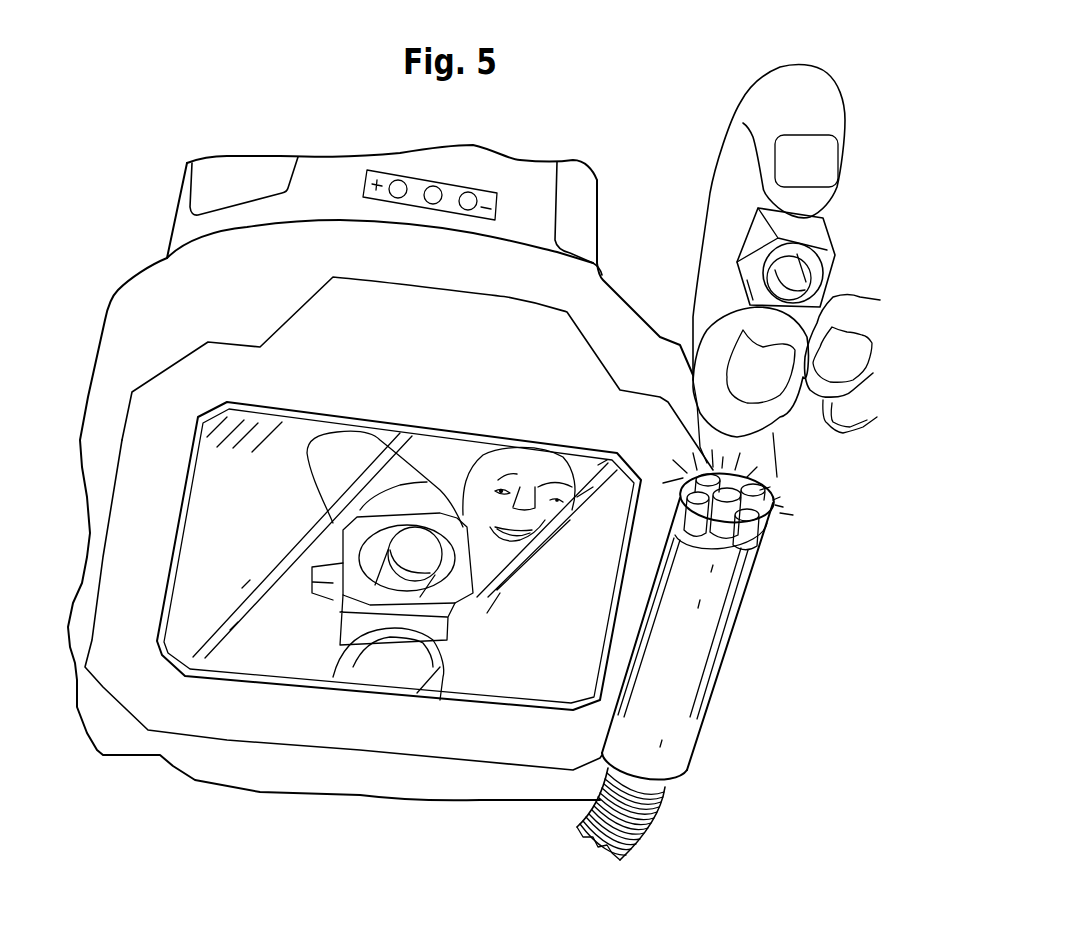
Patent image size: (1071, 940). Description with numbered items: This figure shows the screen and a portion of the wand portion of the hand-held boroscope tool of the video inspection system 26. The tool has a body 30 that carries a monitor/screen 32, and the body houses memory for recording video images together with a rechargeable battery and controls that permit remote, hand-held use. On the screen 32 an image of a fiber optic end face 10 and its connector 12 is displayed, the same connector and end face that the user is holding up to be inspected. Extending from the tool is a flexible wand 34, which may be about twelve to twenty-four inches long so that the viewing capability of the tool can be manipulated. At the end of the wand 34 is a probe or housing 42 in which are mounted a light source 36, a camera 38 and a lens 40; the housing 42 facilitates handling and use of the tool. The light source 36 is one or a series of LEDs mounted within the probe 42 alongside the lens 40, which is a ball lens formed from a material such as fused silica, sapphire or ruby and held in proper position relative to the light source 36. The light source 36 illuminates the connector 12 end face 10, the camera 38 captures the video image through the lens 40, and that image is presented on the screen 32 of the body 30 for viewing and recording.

The video inspection system 26 is at (622, 160).
The body 30 is at (580, 226).
The monitor/screen 32 is at (517, 680).
The connector 12 is at (806, 238).
The fiber optic end face 10 is at (793, 285).
The lens 40 is at (757, 452).
The light source 36 is at (757, 490).
The flexible wand 34 is at (775, 530).
The camera 38 is at (692, 532).
The probe or housing 42 is at (690, 660).